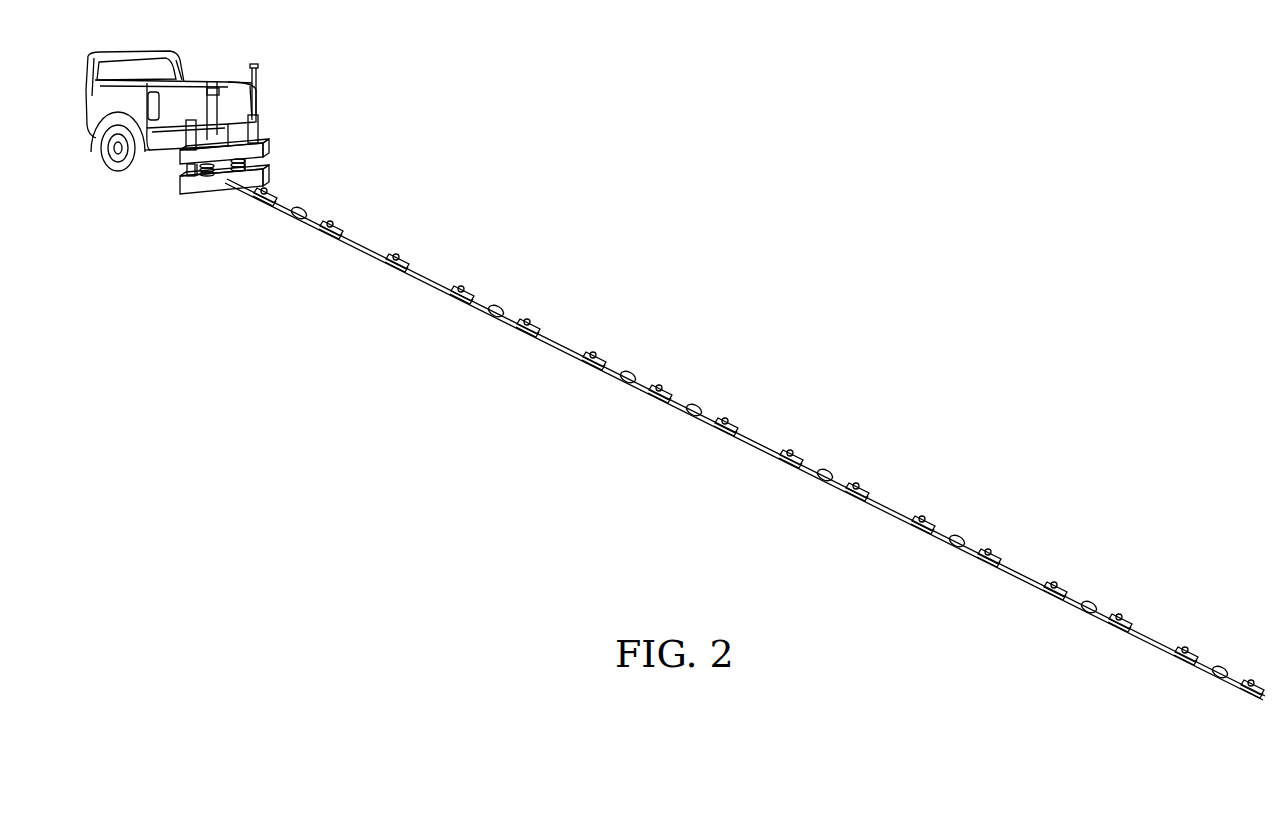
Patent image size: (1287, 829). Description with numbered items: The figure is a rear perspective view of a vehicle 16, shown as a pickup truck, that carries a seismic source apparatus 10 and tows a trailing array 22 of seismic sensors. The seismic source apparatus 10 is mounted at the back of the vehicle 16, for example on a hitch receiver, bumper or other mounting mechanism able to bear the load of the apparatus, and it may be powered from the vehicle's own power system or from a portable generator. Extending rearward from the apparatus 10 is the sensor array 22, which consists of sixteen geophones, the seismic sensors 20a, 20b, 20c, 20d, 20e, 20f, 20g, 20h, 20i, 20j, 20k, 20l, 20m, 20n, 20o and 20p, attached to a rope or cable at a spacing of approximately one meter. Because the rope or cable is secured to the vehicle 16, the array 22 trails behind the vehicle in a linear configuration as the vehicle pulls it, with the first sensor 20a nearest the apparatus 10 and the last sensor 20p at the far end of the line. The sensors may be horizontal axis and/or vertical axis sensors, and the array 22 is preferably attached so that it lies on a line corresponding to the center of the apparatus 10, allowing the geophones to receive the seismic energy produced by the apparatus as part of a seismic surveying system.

The seismic source apparatus 10 is at (296, 124).
The vehicle 16 is at (236, 58).
The array of seismic sensors 22 is at (762, 346).
The seismic sensor 20a is at (261, 205).
The seismic sensor 20b is at (327, 238).
The seismic sensor 20c is at (393, 271).
The seismic sensor 20d is at (458, 303).
The seismic sensor 20e is at (524, 336).
The seismic sensor 20f is at (590, 369).
The seismic sensor 20g is at (656, 402).
The seismic sensor 20h is at (722, 435).
The seismic sensor 20i is at (787, 467).
The seismic sensor 20j is at (853, 500).
The seismic sensor 20k is at (919, 533).
The seismic sensor 20l is at (985, 566).
The seismic sensor 20m is at (1051, 599).
The seismic sensor 20n is at (1116, 631).
The seismic sensor 20o is at (1182, 664).
The seismic sensor 20p is at (1248, 697).